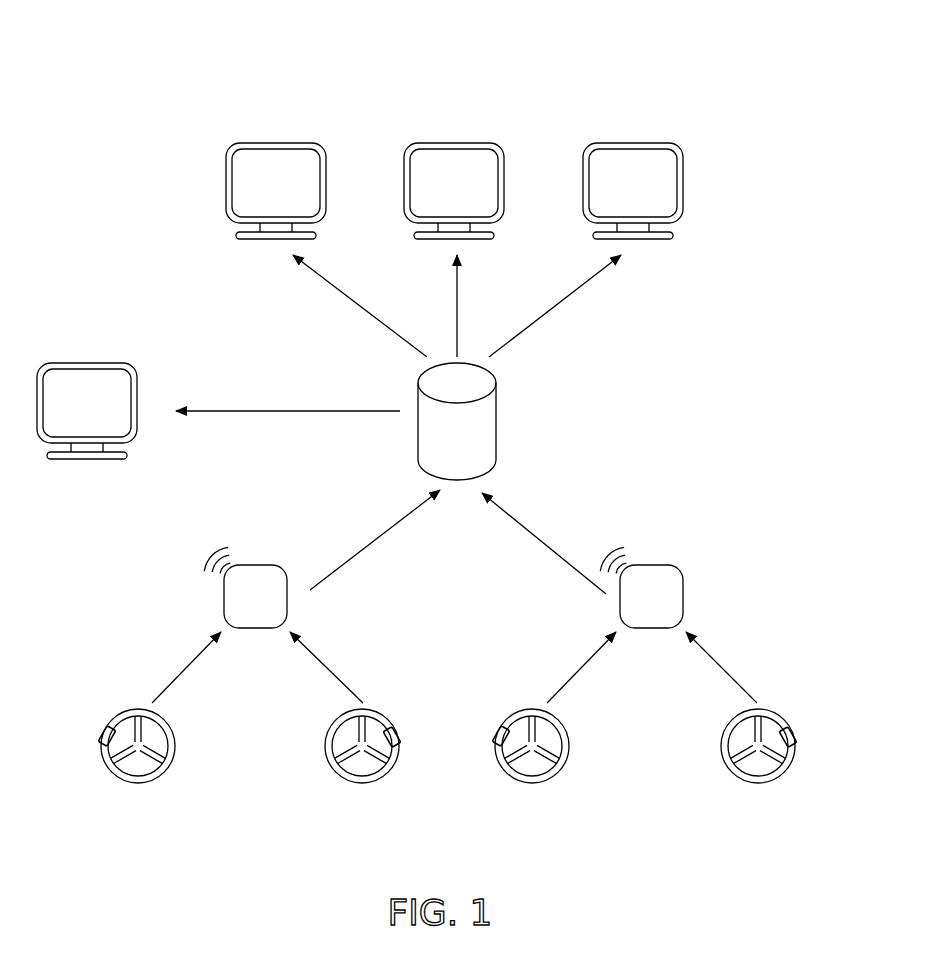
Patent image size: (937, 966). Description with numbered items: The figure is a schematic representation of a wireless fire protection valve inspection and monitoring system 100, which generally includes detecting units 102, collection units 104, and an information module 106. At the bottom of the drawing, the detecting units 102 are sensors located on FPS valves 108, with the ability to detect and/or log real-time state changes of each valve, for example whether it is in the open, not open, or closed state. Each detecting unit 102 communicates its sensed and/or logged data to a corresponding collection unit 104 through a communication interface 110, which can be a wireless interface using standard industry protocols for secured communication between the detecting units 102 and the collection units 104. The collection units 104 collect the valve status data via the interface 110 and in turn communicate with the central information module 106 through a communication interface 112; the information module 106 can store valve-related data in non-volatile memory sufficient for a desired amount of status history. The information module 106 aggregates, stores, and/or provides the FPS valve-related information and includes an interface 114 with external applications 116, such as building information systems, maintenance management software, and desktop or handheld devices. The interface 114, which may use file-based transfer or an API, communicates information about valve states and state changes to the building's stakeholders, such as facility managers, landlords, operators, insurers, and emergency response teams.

The wireless fire protection valve inspection and monitoring system 100 is at (147, 78).
The detecting unit 102 is at (102, 736).
The collection unit 104 is at (263, 578).
The information module 106 is at (488, 433).
The FPS valve 108 is at (138, 782).
The communication interface 110 is at (193, 668).
The communication interface 112 is at (534, 542).
The interface 114 is at (352, 300).
The external application 116 is at (280, 164).